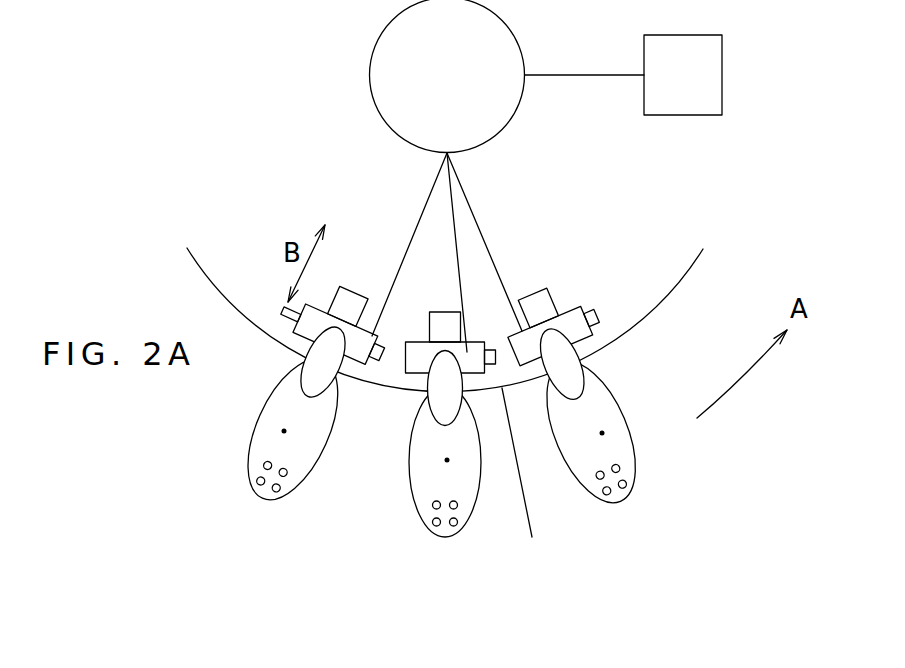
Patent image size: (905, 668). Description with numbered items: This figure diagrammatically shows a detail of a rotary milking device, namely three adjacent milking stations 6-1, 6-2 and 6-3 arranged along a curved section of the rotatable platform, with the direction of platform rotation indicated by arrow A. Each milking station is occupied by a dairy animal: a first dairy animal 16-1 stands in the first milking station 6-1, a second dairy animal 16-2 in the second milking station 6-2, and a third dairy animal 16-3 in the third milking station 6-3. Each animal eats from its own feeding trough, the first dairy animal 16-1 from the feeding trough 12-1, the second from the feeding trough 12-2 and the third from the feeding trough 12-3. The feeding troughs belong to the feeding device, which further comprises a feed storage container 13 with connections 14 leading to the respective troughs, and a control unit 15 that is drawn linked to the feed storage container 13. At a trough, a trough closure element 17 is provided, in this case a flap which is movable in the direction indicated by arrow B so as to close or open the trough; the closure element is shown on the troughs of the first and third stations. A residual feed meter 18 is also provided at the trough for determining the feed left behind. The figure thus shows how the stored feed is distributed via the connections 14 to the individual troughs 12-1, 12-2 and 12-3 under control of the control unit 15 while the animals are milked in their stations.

The feed storage container 13 is at (470, 90).
The control unit 15 is at (705, 90).
The connections 14 is at (489, 252).
The feeding trough 12-1 is at (280, 312).
The feeding trough 12-2 is at (403, 357).
The feeding trough 12-3 is at (513, 352).
The trough closure element 17 is at (351, 302).
The residual feed meter 18 is at (590, 322).
The milking station 6-1 is at (266, 334).
The milking station 6-2 is at (383, 385).
The milking station 6-3 is at (619, 336).
The dairy animal 16-1 is at (284, 431).
The dairy animal 16-2 is at (447, 460).
The dairy animal 16-3 is at (602, 433).